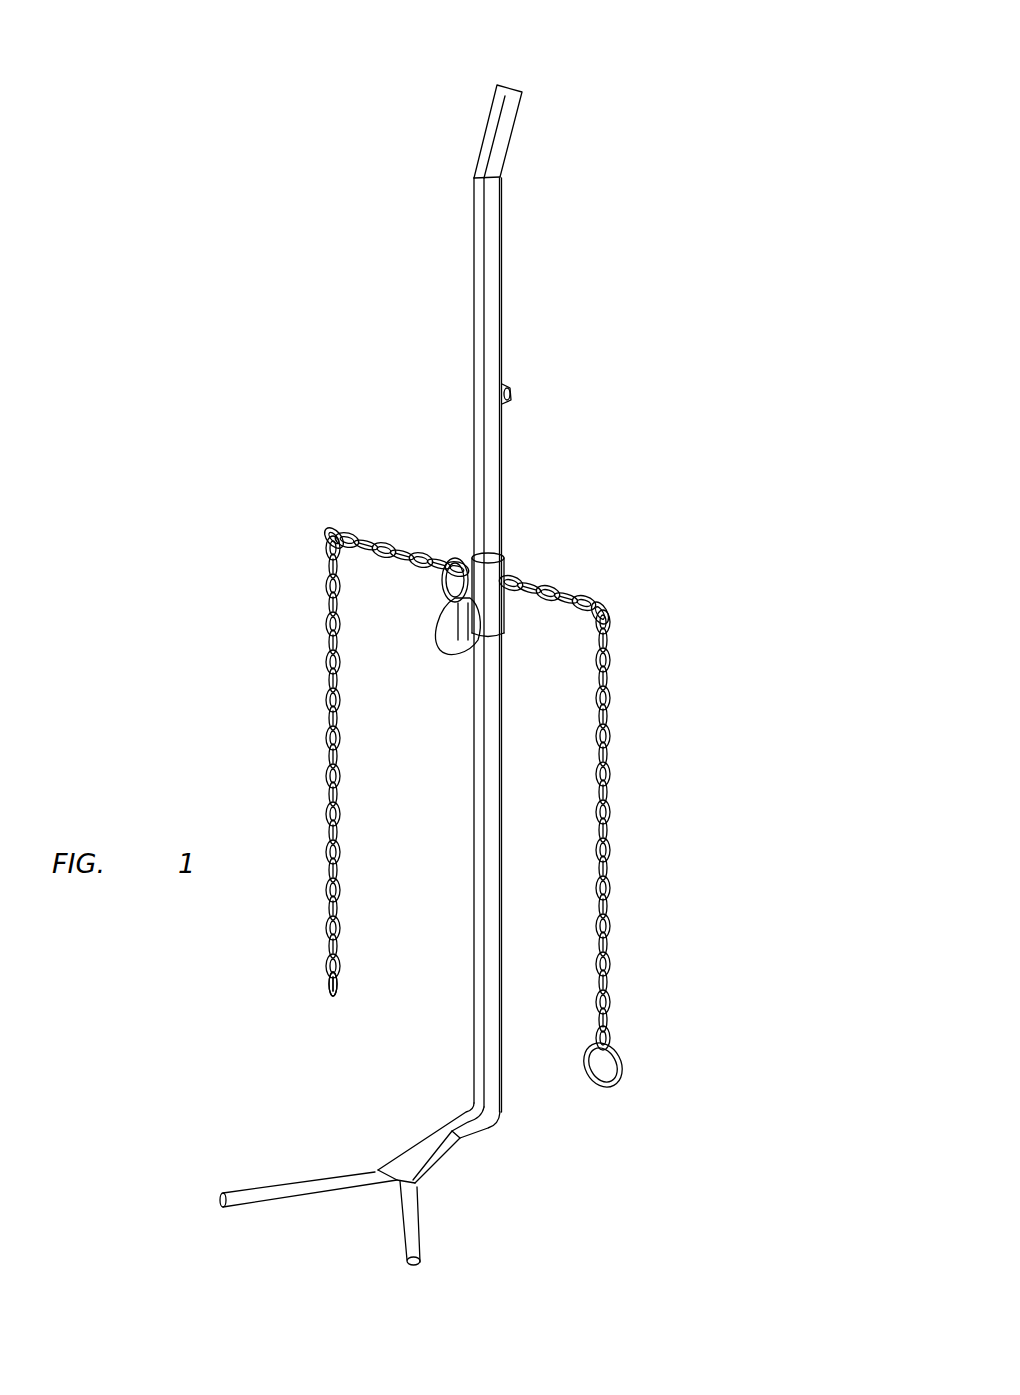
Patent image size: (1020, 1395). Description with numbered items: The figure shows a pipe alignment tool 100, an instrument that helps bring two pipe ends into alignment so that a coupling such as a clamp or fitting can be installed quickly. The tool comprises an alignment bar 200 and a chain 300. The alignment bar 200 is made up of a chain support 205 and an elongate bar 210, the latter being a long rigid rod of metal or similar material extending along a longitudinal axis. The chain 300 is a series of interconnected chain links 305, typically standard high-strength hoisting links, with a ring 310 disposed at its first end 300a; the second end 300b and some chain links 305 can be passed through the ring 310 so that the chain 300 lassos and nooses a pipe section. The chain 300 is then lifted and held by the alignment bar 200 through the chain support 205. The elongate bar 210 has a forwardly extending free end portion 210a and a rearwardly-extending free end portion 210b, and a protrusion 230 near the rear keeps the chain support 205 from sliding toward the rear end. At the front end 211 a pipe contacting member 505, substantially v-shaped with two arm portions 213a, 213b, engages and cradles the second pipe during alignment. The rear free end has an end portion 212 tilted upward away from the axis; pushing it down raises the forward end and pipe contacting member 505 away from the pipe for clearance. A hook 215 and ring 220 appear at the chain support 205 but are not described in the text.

The pipe alignment tool 100 is at (291, 211).
The alignment bar 200 is at (535, 300).
The chain support 205 is at (510, 565).
The elongate bar 210 is at (480, 830).
The forwardly extending free end portion 210a is at (502, 1140).
The rearwardly-extending free end portion 210b is at (510, 178).
The front end 211 is at (407, 1153).
The end portion 212 is at (495, 97).
The arm portion 213a is at (240, 1195).
The arm portion 213b is at (415, 1232).
The hook 215 is at (440, 640).
The ring 220 is at (442, 600).
The protrusion 230 is at (510, 390).
The chain 300 is at (617, 700).
The first end 300a is at (625, 1030).
The second end 300b is at (318, 978).
The chain links 305 is at (323, 690).
The ring 310 is at (622, 1082).
The pipe contacting member 505 is at (285, 1226).